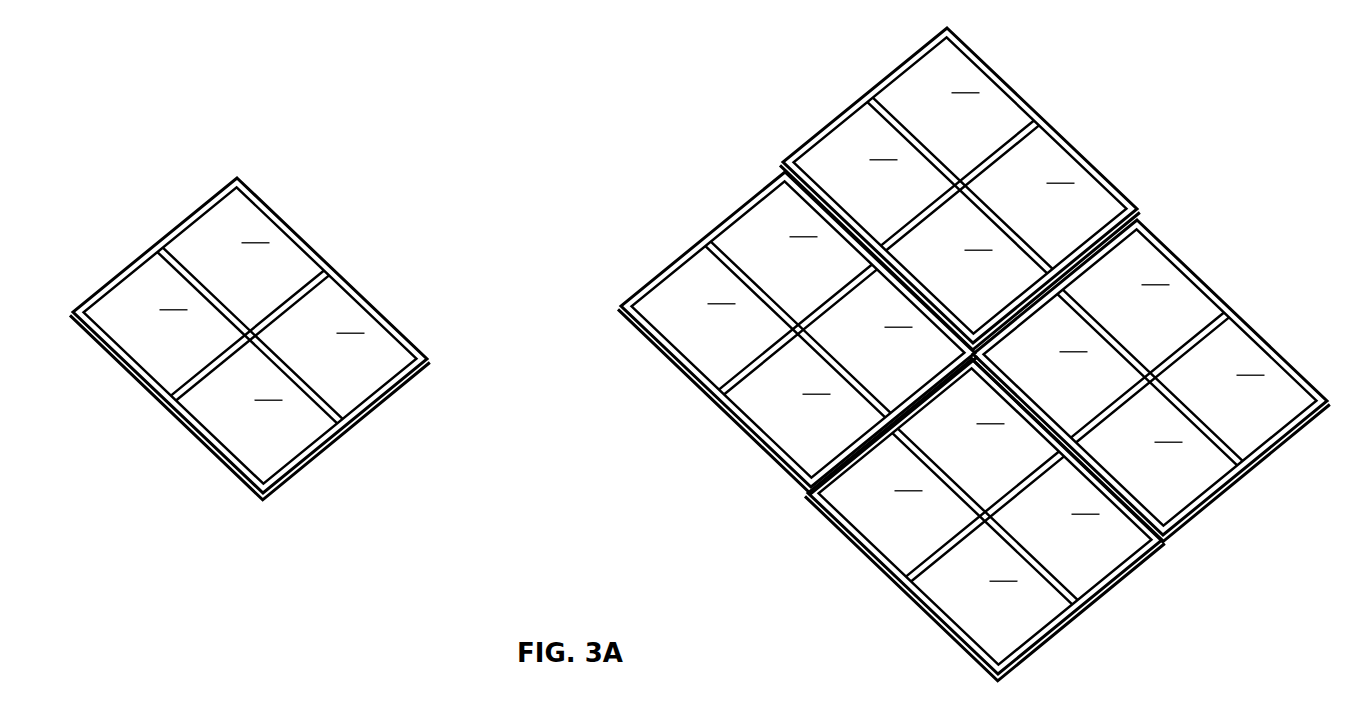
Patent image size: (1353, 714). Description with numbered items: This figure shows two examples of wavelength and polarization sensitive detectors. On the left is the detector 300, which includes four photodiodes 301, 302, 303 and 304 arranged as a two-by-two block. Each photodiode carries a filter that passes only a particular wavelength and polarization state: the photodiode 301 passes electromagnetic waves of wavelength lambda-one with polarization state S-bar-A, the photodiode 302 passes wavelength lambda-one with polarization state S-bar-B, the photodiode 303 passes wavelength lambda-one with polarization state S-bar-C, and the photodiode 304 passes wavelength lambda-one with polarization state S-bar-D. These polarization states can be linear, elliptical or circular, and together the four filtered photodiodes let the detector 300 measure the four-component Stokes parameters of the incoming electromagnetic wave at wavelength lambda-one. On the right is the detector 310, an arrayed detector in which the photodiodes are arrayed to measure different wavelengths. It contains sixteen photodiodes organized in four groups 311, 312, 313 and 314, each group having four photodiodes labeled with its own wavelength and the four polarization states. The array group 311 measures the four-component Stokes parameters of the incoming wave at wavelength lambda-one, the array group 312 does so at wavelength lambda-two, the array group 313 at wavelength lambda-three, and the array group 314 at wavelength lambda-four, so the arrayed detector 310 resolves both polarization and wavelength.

The detector 300 is at (116, 272).
The photodiode 301 is at (177, 337).
The photodiode 302 is at (260, 278).
The photodiode 303 is at (233, 379).
The photodiode 304 is at (397, 373).
The detector 310 is at (760, 127).
The array group 311 is at (662, 352).
The array group 312 is at (997, 78).
The array group 313 is at (955, 638).
The array group 314 is at (1267, 337).